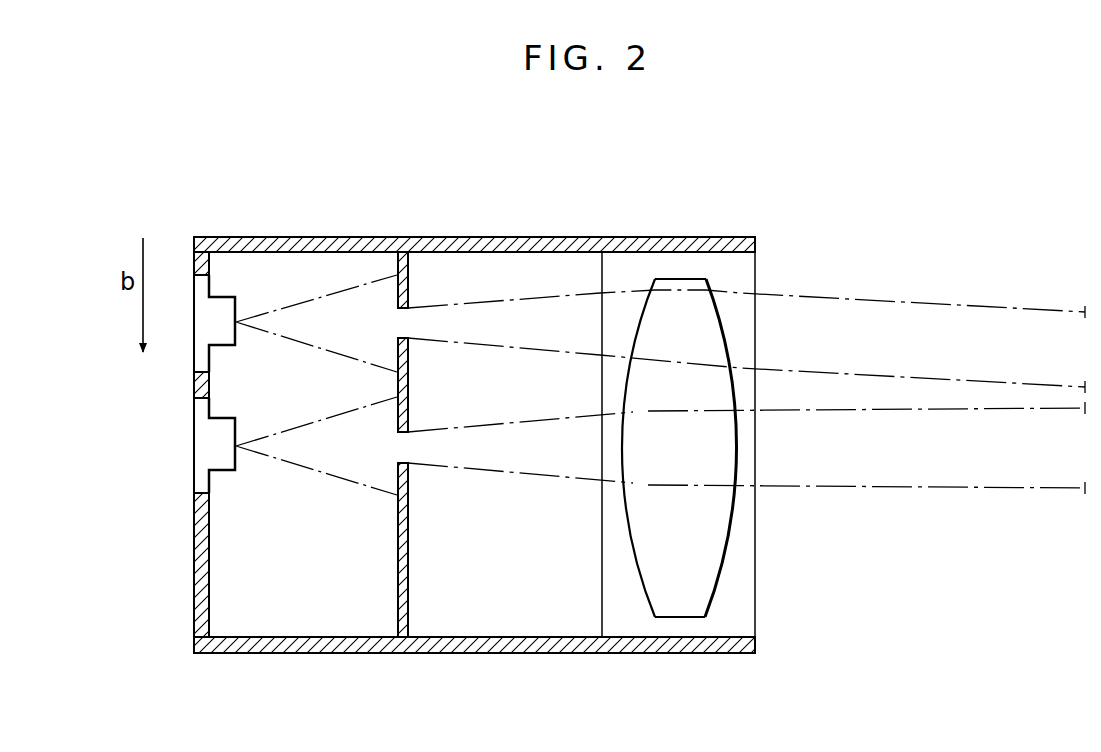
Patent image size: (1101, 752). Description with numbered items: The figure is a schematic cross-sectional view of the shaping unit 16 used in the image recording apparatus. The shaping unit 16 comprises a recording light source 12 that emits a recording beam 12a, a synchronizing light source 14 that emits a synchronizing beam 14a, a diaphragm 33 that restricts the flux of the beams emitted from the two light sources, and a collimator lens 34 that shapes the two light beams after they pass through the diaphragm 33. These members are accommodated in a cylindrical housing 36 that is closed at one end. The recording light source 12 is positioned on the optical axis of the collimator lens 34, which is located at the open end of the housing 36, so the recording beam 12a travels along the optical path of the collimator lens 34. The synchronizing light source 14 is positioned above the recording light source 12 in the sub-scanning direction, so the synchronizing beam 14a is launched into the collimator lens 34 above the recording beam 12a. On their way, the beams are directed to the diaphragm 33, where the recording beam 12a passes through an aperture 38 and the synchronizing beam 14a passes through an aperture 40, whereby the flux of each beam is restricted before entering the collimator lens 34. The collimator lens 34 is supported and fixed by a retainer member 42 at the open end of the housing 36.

The recording light source 12 is at (206, 454).
The recording beam 12a is at (945, 492).
The synchronizing light source 14 is at (227, 310).
The synchronizing beam 14a is at (977, 305).
The shaping unit 16 is at (522, 226).
The diaphragm 33 is at (393, 607).
The collimator lens 34 is at (718, 330).
The housing 36 is at (698, 240).
The aperture 38 is at (390, 449).
The aperture 40 is at (385, 314).
The retainer member 42 is at (730, 627).